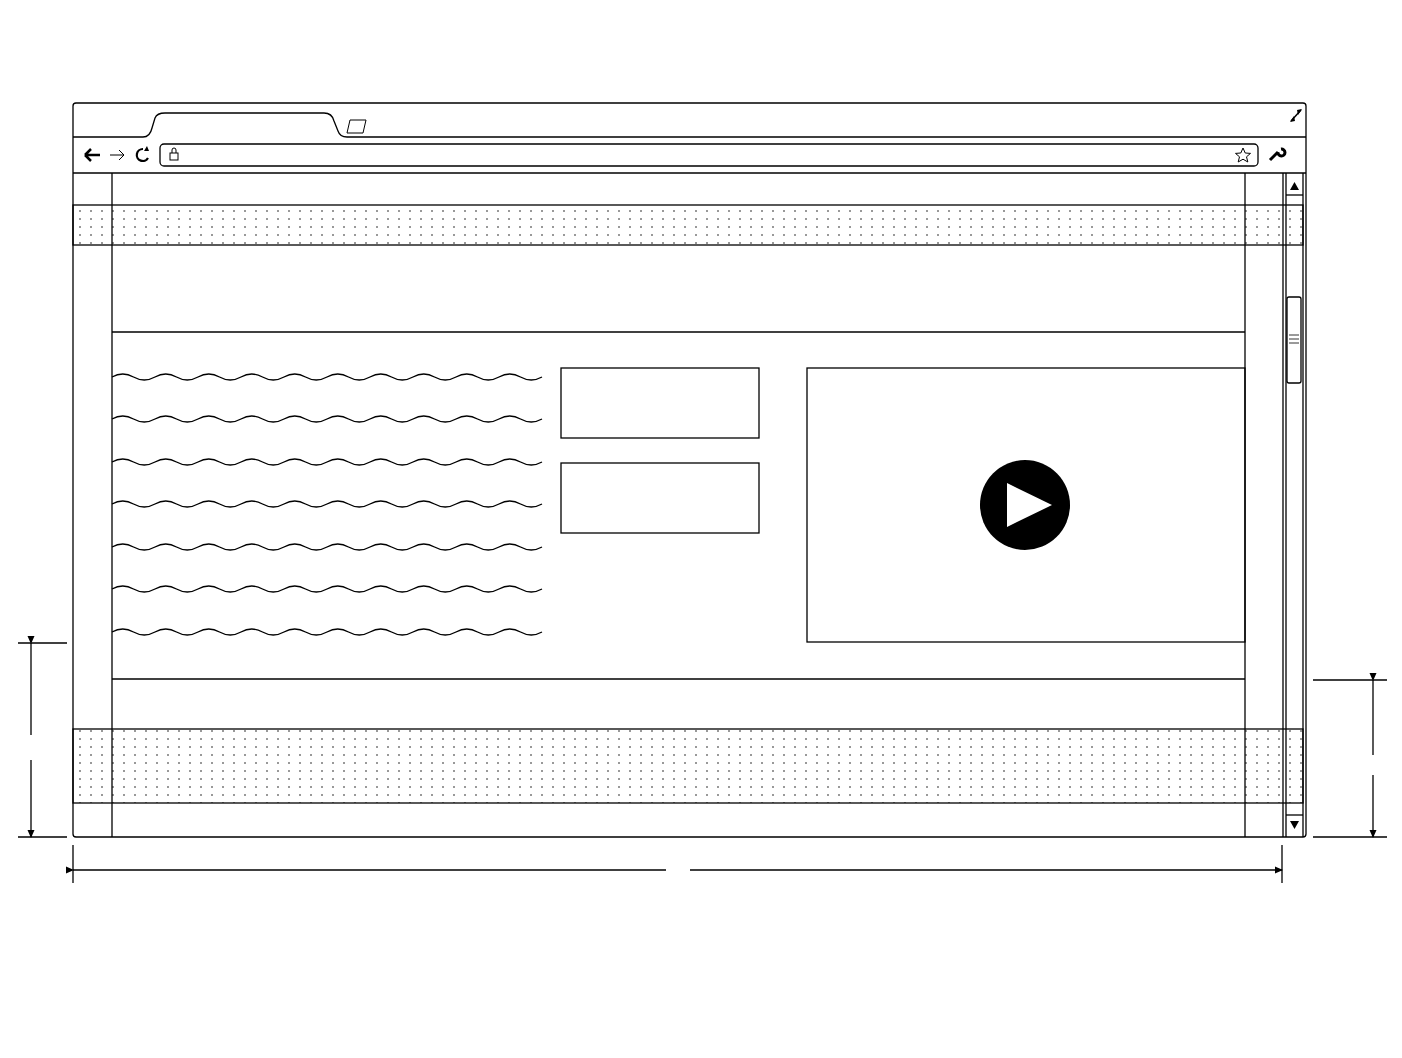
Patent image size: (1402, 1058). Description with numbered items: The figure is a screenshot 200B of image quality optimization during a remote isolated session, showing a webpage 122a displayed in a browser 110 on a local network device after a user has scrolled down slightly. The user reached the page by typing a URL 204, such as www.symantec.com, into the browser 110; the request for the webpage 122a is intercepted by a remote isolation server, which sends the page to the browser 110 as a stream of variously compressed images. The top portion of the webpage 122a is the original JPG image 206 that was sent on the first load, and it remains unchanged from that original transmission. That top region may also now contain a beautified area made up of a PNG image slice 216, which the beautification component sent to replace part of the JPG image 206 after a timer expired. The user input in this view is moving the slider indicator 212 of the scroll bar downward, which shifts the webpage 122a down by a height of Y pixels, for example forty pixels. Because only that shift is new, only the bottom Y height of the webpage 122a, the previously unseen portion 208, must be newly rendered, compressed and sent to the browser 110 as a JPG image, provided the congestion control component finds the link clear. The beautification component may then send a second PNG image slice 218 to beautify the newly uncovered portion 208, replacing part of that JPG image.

The screenshot 200B is at (1300, 68).
The browser 110 is at (1030, 103).
The URL 204 is at (425, 143).
The JPG image 206 is at (73, 473).
The portion of the webpage 208 is at (40, 740).
The PNG image slice 216 is at (1313, 205).
The slider indicator 212 is at (1299, 329).
The webpage 122a is at (1263, 428).
The second PNG image slice 218 is at (1313, 729).